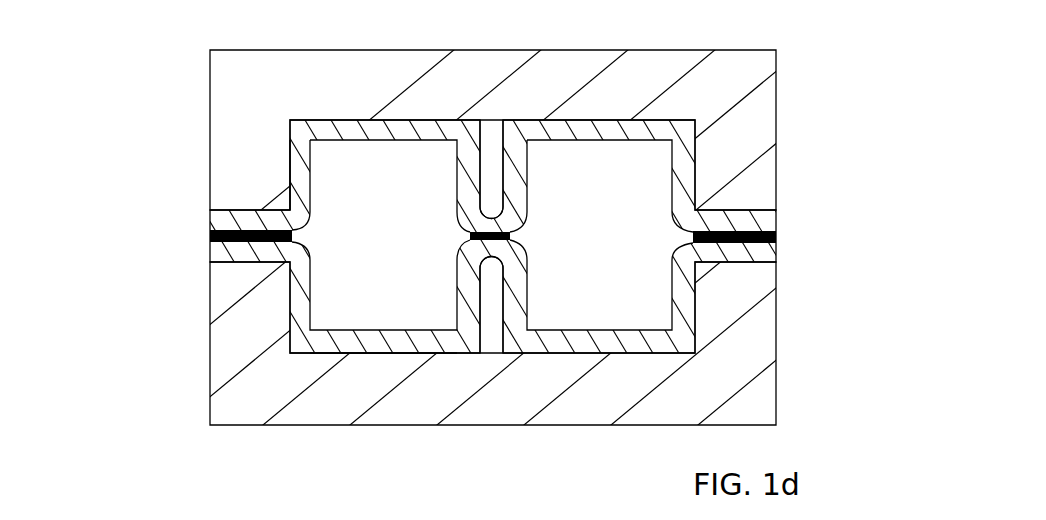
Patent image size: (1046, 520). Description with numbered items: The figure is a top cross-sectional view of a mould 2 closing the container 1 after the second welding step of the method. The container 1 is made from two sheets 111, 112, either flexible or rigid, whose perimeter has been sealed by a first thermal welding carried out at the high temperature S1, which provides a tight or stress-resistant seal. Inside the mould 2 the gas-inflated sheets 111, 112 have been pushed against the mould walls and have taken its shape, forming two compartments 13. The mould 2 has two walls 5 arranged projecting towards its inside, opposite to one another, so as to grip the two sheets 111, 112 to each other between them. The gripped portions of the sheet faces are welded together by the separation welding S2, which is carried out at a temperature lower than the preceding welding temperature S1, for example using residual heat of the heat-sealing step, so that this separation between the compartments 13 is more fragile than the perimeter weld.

The mould 2 is at (560, 63).
The container 1 is at (598, 140).
The compartments 13 is at (399, 290).
The walls 5 is at (497, 178).
The sheet 111 is at (300, 191).
The sheet 112 is at (335, 331).
The separation welding S2 is at (510, 229).
The welding temperature S1 is at (776, 233).